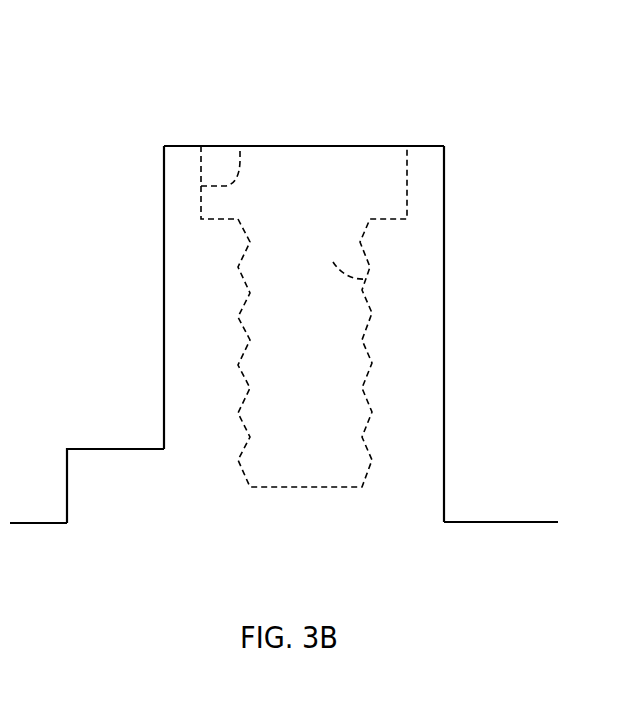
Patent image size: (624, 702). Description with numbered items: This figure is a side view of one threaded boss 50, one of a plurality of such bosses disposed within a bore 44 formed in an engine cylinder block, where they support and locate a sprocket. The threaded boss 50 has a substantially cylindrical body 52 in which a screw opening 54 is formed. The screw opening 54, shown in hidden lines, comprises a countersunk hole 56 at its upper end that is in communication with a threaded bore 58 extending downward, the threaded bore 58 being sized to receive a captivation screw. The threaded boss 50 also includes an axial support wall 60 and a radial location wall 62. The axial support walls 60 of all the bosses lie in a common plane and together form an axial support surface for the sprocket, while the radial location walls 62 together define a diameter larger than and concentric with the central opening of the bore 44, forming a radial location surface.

The bore 44 is at (518, 522).
The threaded boss 50 is at (309, 277).
The substantially cylindrical body 52 is at (444, 387).
The screw opening 54 is at (305, 163).
The countersunk hole 56 is at (239, 146).
The threaded bore 58 is at (333, 262).
The axial support wall 60 is at (108, 448).
The radial location wall 62 is at (163, 317).